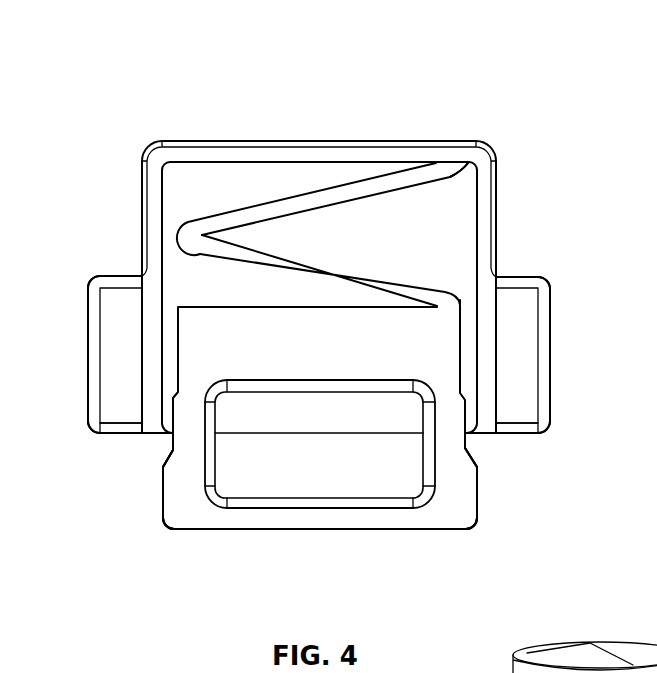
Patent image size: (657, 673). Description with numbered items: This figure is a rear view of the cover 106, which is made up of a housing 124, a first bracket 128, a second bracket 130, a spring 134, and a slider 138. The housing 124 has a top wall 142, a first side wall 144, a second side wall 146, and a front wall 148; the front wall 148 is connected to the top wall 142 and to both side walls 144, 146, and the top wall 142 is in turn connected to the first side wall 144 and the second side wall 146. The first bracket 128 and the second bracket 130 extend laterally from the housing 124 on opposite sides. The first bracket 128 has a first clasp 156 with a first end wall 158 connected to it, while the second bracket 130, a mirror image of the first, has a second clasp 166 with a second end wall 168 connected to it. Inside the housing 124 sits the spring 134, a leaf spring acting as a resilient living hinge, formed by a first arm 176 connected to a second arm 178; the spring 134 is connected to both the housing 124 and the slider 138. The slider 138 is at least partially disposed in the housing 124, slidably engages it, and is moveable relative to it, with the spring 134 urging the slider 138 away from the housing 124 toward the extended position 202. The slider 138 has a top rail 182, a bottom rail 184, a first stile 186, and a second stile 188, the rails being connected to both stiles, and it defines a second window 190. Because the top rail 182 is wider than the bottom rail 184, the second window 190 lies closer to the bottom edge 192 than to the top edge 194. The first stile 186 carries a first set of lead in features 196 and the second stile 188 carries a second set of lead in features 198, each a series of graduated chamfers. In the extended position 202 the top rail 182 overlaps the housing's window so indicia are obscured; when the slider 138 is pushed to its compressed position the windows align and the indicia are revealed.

The cover 106 is at (560, 44).
The extended position 202 is at (542, 104).
The housing 124 is at (423, 141).
The top wall 142 is at (385, 156).
The second side wall 146 is at (278, 153).
The first side wall 144 is at (483, 205).
The spring 134 is at (382, 192).
The first arm 176 is at (328, 200).
The second arm 178 is at (255, 258).
The top edge 194 is at (202, 307).
The front wall 148 is at (448, 208).
The second bracket 130 is at (107, 312).
The second clasp 166 is at (107, 370).
The second end wall 168 is at (110, 415).
The first bracket 128 is at (525, 302).
The first clasp 156 is at (512, 358).
The first end wall 158 is at (527, 417).
The bottom rail 184 is at (360, 513).
The bottom edge 192 is at (310, 532).
The second stile 188 is at (185, 500).
The first stile 186 is at (448, 503).
The second set of lead in features 198 is at (163, 452).
The first set of lead in features 196 is at (487, 450).
The top rail 182 is at (358, 360).
The slider 138 is at (417, 513).
The second window 190 is at (256, 473).